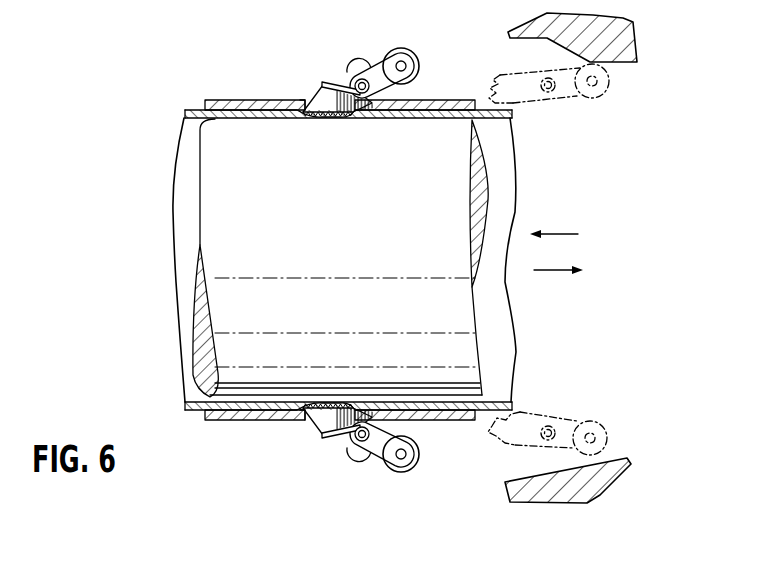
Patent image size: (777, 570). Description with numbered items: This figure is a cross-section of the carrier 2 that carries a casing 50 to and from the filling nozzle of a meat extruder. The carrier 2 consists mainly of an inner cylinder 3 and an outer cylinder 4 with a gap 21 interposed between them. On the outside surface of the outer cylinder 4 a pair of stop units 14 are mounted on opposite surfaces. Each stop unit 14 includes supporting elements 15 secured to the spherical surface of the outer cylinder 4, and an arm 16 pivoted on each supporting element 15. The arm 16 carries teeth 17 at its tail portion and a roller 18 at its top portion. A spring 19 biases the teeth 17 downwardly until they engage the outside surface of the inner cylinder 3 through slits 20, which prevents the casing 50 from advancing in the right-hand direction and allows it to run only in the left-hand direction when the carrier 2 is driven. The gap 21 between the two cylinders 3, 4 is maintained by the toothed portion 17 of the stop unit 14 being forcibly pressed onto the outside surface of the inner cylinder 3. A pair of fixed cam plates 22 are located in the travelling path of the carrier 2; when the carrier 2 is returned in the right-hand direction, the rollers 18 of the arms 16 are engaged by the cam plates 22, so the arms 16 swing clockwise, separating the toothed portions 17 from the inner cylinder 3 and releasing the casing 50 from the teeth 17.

The carrier 2 is at (251, 92).
The inner cylinder 3 is at (200, 238).
The outer cylinder 4 is at (217, 99).
The stop unit 14 is at (337, 78).
The supporting element 15 is at (364, 72).
The arm 16 is at (385, 58).
The teeth 17 is at (318, 120).
The roller 18 is at (416, 58).
The spring 19 is at (324, 82).
The slit 20 is at (299, 100).
The gap 21 is at (414, 121).
The fixed cam plate 22 is at (640, 32).
The casing 50 is at (514, 170).